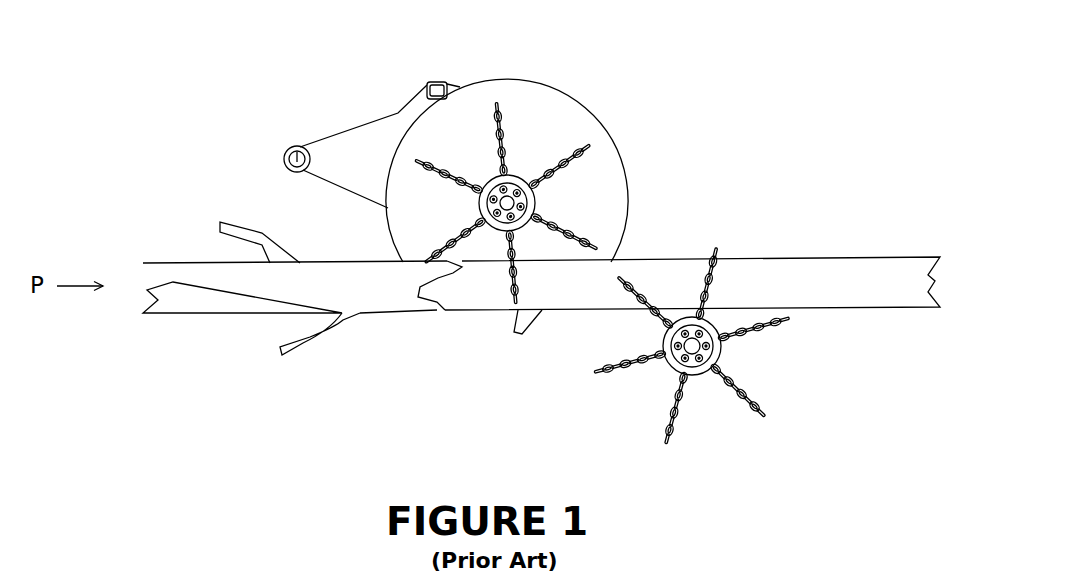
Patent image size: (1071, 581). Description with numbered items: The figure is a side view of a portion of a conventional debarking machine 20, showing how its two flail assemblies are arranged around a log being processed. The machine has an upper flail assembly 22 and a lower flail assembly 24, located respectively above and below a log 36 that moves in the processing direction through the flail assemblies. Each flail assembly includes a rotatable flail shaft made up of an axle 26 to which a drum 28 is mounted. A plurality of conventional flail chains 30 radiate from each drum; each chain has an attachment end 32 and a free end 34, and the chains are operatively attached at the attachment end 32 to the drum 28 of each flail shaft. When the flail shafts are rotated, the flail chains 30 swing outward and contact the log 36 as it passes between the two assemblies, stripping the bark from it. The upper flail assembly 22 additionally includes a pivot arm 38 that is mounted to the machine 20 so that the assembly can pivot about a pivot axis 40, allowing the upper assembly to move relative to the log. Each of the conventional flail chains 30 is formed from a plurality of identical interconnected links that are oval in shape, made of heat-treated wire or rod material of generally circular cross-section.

The debarking machine 20 is at (505, 131).
The upper flail assembly 22 is at (630, 47).
The lower flail assembly 24 is at (608, 448).
The axle 26 is at (512, 203).
The drum 28 is at (519, 170).
The flail chains 30 is at (512, 123).
The attachment end 32 is at (475, 215).
The free end 34 is at (497, 105).
The log 36 is at (778, 278).
The pivot arm 38 is at (365, 143).
The pivot axis 40 is at (298, 147).